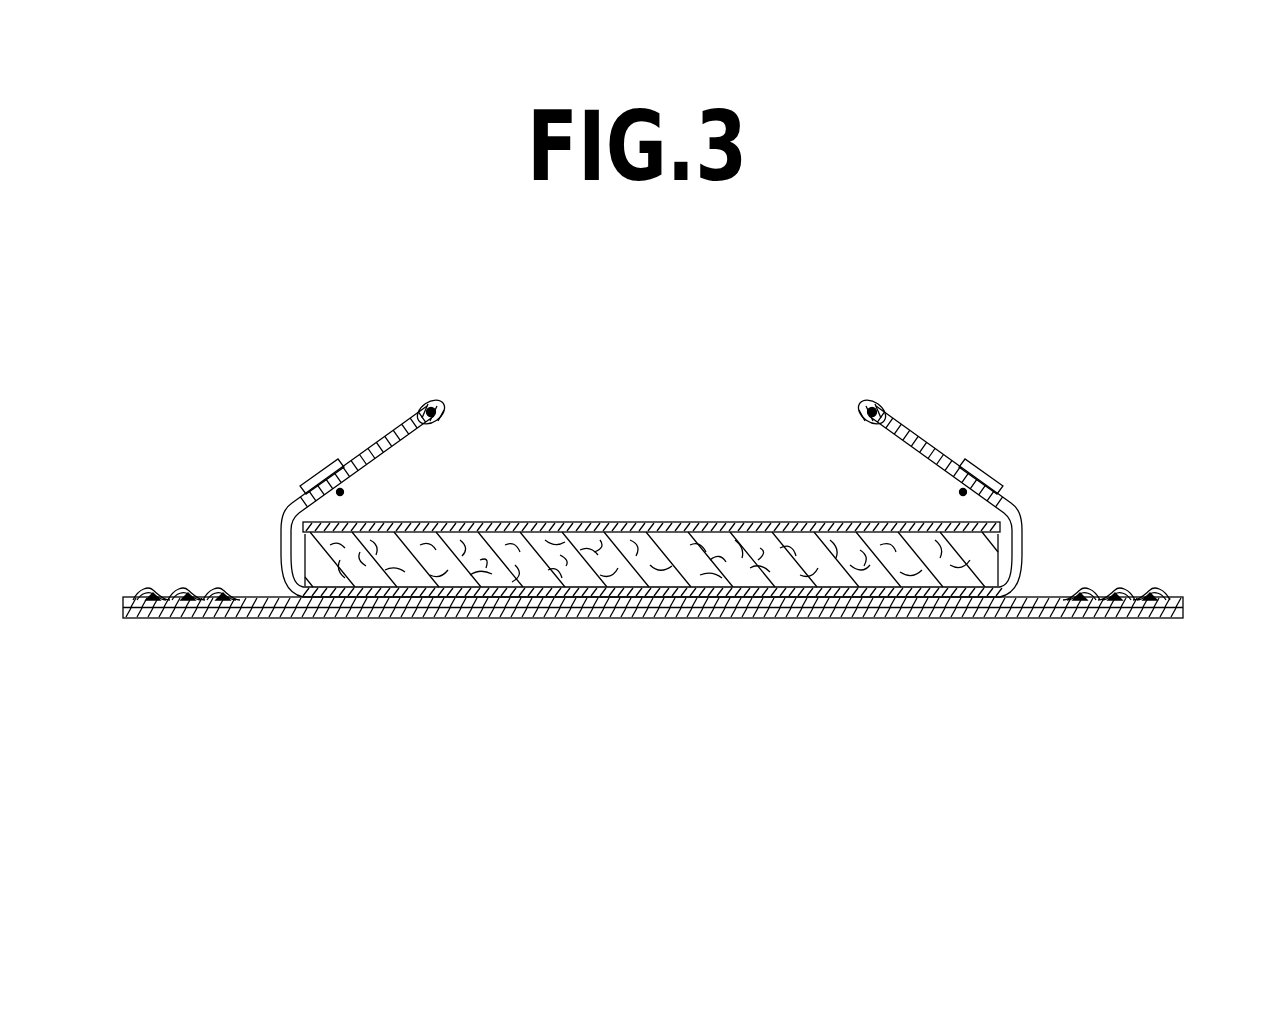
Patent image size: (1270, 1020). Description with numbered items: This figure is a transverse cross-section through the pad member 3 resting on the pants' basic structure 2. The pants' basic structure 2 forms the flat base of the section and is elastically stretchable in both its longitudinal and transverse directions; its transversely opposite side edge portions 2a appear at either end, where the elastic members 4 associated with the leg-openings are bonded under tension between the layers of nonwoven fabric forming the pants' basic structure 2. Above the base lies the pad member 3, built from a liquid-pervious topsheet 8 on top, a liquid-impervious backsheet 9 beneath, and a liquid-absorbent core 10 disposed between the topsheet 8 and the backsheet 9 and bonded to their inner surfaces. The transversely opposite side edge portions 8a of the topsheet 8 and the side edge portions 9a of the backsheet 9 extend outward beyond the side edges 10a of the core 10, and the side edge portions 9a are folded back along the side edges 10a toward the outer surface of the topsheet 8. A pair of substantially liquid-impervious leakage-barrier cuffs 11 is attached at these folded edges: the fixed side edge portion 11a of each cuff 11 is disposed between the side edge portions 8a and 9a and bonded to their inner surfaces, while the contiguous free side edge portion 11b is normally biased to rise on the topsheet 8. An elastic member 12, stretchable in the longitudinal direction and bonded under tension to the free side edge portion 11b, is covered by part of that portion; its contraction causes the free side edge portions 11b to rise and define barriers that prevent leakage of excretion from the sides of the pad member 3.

The pants' basic structure 2 is at (1183, 617).
The side edge portions 2a is at (128, 597).
The pad member 3 is at (660, 457).
The elastic members 4 is at (150, 618).
The topsheet 8 is at (685, 522).
The side edge portions of the topsheet 8a is at (342, 494).
The backsheet 9 is at (787, 590).
The side edge portions of the backsheet 9a is at (283, 510).
The liquid-absorbent core 10 is at (590, 565).
The side edges of the core 10a is at (316, 547).
The leakage-barrier cuffs 11 is at (370, 448).
The fixed side edge portion 11a is at (313, 483).
The free side edge portion 11b is at (410, 415).
The elastic member 12 is at (447, 416).